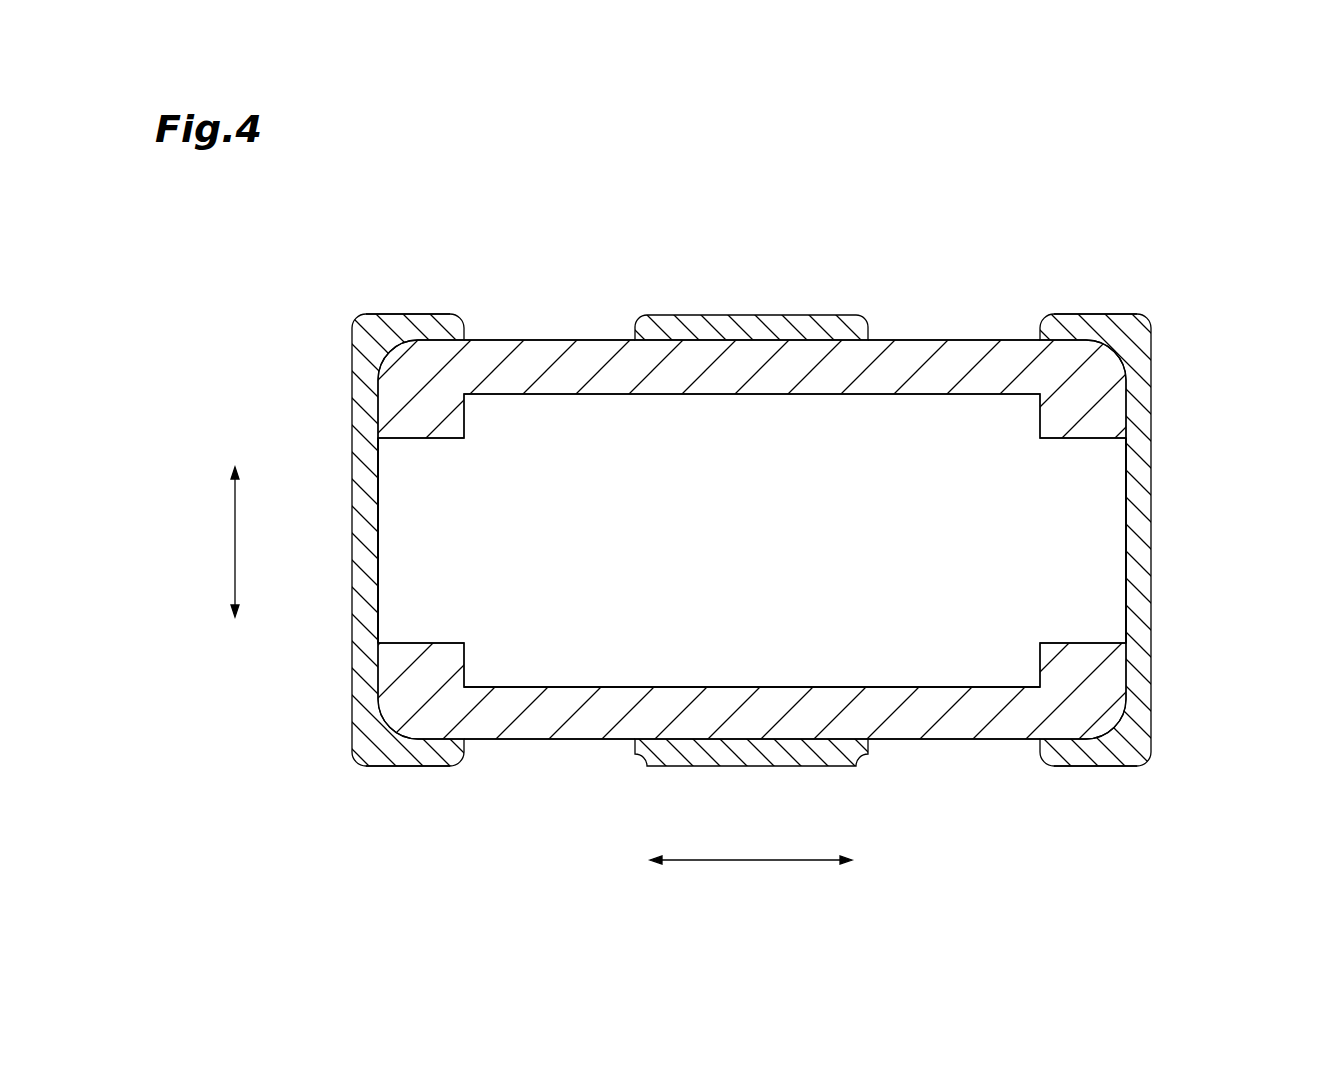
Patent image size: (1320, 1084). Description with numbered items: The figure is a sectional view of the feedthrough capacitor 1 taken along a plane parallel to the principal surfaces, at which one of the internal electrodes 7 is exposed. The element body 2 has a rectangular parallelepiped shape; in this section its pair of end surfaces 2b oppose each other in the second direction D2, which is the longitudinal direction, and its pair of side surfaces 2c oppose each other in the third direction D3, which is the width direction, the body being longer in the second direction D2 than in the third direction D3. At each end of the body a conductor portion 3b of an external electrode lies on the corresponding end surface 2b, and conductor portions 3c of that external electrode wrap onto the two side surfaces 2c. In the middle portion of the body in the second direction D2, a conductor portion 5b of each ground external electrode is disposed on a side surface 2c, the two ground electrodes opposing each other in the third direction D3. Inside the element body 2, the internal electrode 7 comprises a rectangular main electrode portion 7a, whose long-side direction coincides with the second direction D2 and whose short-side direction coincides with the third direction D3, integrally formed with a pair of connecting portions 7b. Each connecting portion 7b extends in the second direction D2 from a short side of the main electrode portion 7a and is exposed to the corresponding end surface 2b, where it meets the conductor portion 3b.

The feedthrough capacitor 1 is at (797, 203).
The element body 2 is at (593, 340).
The end surface 2b is at (372, 470).
The side surface 2c is at (918, 340).
The conductor portion 3b is at (352, 425).
The conductor portion 3c is at (415, 314).
The conductor portion 5b is at (703, 315).
The internal electrode 7 is at (905, 690).
The main electrode portion 7a is at (573, 668).
The connecting portion 7b is at (405, 530).
The second direction D2 is at (752, 866).
The third direction D3 is at (233, 540).